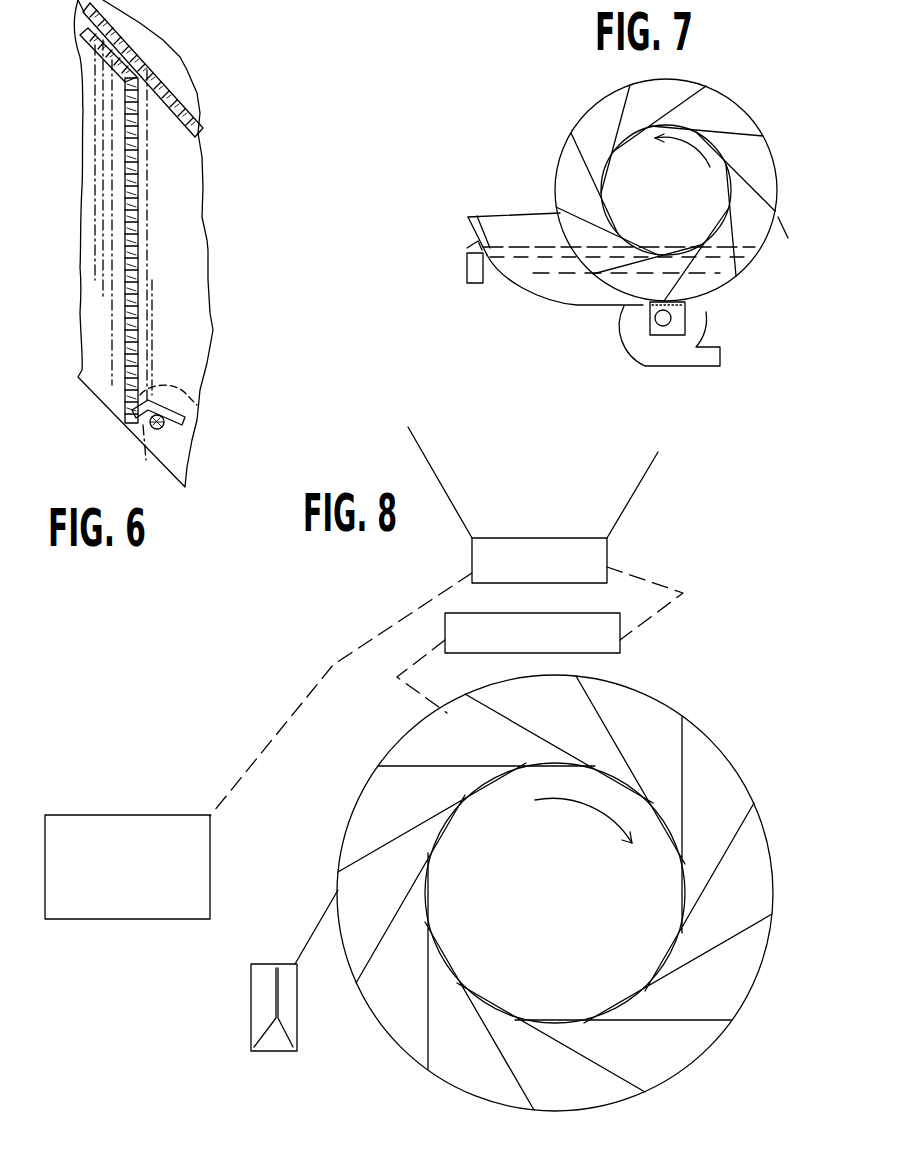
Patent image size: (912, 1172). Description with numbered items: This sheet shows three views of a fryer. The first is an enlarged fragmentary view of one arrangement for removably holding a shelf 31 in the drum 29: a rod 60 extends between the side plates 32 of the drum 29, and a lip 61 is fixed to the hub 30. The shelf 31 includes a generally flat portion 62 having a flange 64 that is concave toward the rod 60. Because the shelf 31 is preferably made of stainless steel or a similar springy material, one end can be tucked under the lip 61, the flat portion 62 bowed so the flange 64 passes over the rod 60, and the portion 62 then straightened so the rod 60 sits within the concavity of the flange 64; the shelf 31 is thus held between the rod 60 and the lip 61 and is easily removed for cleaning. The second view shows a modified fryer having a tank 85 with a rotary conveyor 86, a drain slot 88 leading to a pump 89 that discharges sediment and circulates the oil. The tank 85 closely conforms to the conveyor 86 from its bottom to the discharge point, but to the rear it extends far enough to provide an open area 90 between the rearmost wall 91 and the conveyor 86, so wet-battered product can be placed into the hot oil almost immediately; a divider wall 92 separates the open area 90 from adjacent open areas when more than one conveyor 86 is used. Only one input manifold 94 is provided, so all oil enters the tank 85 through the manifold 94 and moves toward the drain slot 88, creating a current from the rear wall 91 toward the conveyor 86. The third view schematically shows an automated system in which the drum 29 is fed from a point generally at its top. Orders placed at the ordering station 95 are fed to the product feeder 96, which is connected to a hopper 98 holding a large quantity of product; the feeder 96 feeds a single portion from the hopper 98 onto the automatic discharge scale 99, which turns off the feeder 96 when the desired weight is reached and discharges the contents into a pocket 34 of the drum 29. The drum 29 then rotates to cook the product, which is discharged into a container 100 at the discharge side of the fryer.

In FIG. 8, the drum 29 is at (699, 725).
In FIG. 6, the hub 30 is at (197, 120).
In FIG. 8, the hub 30 is at (426, 884).
In FIG. 6, the shelf 31 is at (121, 381).
In FIG. 8, the shelf 31 is at (361, 971).
In FIG. 6, the side plates 32 is at (197, 330).
In FIG. 8, the pocket 34 is at (449, 788).
In FIG. 6, the rod 60 is at (180, 430).
In FIG. 6, the lip 61 is at (137, 68).
In FIG. 6, the flat portion 62 is at (137, 248).
In FIG. 6, the flange 64 is at (195, 402).
In FIG. 7, the tank 85 is at (590, 305).
In FIG. 7, the rotary conveyor 86 is at (573, 130).
In FIG. 7, the drain slot 88 is at (687, 320).
In FIG. 7, the pump 89 is at (653, 360).
In FIG. 7, the open area 90 is at (508, 240).
In FIG. 7, the rearmost wall 91 is at (467, 230).
In FIG. 7, the divider wall 92 is at (537, 220).
In FIG. 7, the input manifold 94 is at (467, 245).
In FIG. 8, the ordering station 95 is at (203, 818).
In FIG. 8, the product feeder 96 is at (602, 548).
In FIG. 8, the hopper 98 is at (620, 510).
In FIG. 8, the automatic discharge scale 99 is at (620, 643).
In FIG. 8, the container 100 is at (263, 996).